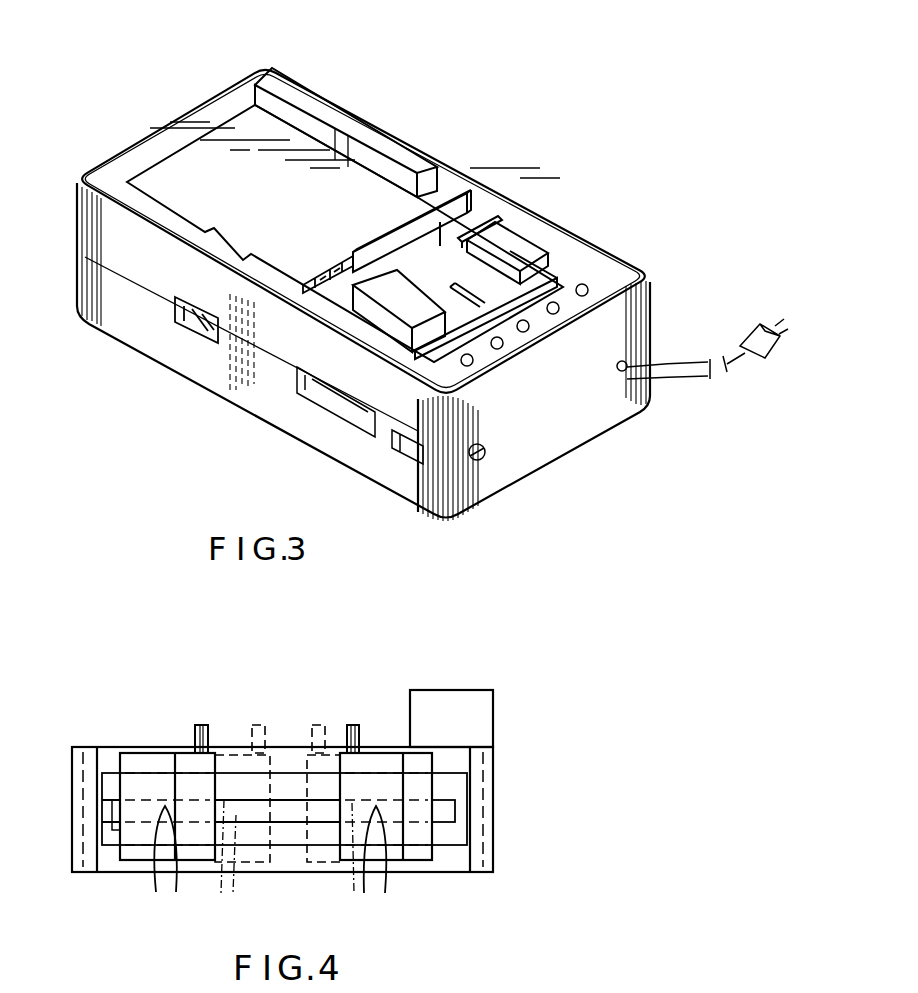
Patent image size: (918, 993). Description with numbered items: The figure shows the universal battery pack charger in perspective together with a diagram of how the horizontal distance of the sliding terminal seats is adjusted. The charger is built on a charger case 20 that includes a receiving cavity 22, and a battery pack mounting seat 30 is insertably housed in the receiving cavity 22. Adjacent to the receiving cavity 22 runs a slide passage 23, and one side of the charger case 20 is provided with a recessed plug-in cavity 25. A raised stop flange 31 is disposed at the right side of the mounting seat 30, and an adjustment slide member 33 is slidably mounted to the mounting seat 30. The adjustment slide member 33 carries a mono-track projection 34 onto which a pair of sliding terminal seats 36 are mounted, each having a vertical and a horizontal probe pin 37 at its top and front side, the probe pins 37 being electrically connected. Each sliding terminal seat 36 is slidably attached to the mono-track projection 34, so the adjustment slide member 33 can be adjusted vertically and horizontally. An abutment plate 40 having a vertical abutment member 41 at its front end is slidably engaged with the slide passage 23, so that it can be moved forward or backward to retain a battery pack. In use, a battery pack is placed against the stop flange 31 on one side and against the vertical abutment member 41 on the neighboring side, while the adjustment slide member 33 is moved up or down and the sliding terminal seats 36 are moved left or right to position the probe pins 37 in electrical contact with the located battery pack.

In FIG. 3, the charger case 20 is at (160, 343).
In FIG. 3, the receiving cavity 22 is at (185, 158).
In FIG. 3, the slide passage 23 is at (531, 249).
In FIG. 3, the recessed plug-in cavity 25 is at (175, 308).
In FIG. 3, the battery pack mounting seat 30 is at (228, 162).
In FIG. 4, the battery pack mounting seat 30 is at (497, 807).
In FIG. 3, the raised stop flange 31 is at (301, 119).
In FIG. 4, the raised stop flange 31 is at (410, 720).
In FIG. 4, the adjustment slide member 33 is at (234, 748).
In FIG. 4, the mono-track projection 34 is at (284, 770).
In FIG. 3, the sliding terminal seat 36 is at (310, 297).
In FIG. 4, the sliding terminal seat 36 is at (147, 740).
In FIG. 4, the probe pin 37 is at (201, 725).
In FIG. 3, the abutment plate 40 is at (478, 212).
In FIG. 3, the vertical abutment member 41 is at (446, 166).